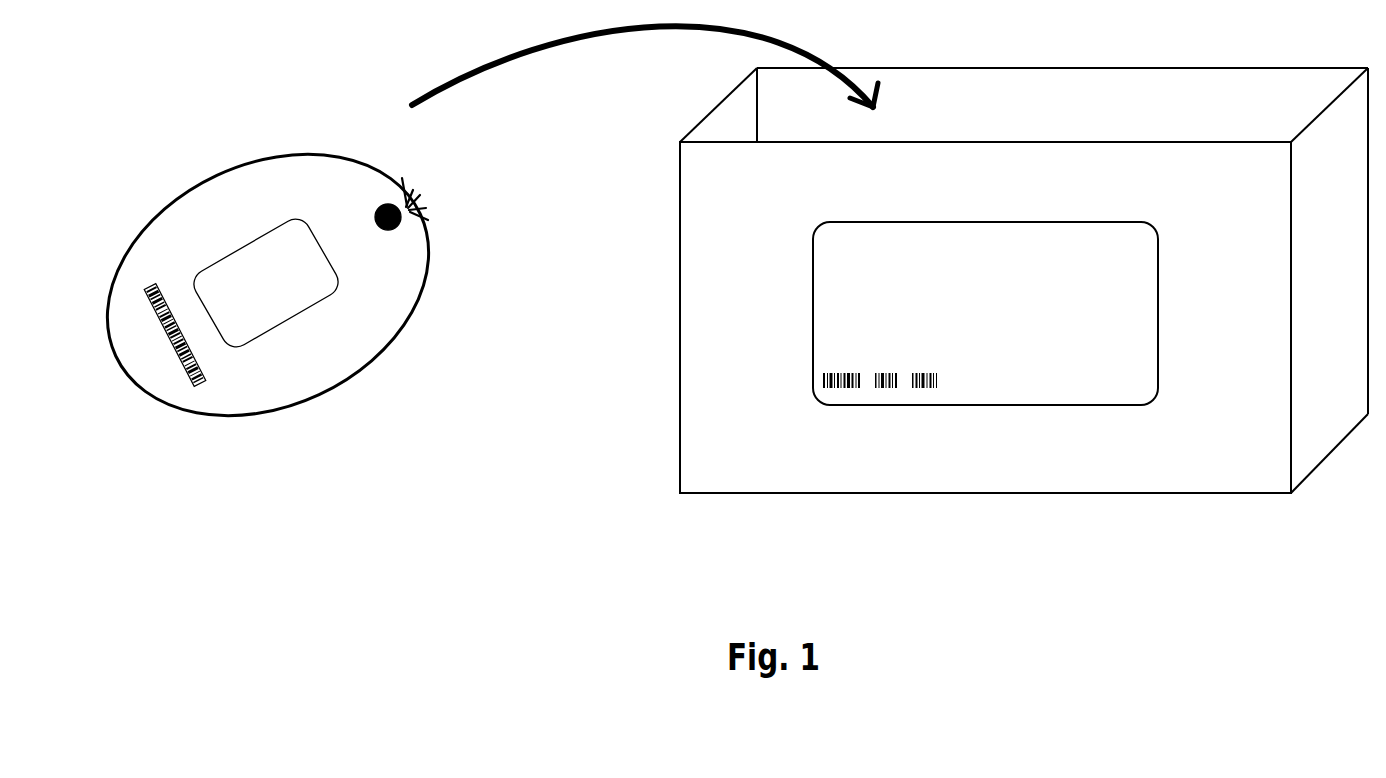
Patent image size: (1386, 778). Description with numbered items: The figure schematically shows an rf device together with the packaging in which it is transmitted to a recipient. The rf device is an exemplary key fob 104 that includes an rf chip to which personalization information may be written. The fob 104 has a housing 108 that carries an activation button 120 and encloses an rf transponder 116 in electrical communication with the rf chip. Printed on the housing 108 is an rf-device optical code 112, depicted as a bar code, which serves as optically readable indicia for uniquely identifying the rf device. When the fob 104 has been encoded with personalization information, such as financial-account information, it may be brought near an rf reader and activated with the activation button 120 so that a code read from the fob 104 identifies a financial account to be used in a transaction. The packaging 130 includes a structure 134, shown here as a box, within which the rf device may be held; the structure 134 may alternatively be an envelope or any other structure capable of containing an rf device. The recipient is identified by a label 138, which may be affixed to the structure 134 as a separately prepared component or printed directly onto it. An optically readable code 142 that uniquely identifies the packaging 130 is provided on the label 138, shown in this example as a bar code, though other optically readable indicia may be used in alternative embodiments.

The key fob 104 is at (270, 284).
The housing 108 is at (274, 153).
The rf-device optical code 112 is at (200, 387).
The rf transponder 116 is at (393, 230).
The activation button 120 is at (267, 340).
The packaging 130 is at (994, 328).
The structure 134 is at (678, 274).
The label 138 is at (968, 303).
The optically readable code 142 is at (844, 389).